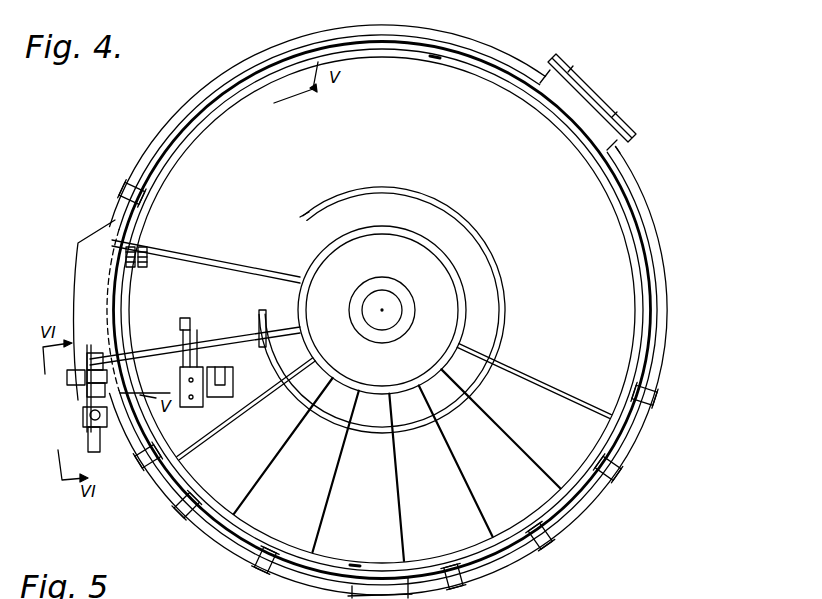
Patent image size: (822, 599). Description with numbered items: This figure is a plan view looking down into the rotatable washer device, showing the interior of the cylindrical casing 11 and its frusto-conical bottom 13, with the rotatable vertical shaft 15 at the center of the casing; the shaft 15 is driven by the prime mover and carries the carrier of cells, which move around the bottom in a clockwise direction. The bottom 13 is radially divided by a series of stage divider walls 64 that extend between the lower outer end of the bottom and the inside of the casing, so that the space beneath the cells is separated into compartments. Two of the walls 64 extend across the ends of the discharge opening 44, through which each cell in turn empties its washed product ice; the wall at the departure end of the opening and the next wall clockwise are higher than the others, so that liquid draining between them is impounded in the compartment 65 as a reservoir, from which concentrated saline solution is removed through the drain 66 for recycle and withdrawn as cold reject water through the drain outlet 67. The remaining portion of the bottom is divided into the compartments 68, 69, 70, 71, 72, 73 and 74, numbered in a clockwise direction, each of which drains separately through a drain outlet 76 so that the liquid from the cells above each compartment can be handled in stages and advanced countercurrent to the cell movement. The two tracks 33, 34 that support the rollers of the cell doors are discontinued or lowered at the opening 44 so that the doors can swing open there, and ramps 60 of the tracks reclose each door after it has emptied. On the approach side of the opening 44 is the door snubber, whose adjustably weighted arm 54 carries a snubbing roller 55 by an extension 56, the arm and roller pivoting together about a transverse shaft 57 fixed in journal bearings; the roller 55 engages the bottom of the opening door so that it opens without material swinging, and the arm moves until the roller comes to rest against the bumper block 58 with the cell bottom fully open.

The cylindrical casing 11 is at (588, 493).
The frusto-conical bottom 13 is at (611, 280).
The rotatable vertical shaft 15 is at (397, 297).
The track 33 is at (437, 55).
The track 34 is at (477, 233).
The discharge opening 44 is at (265, 312).
The adjustably weighted arm 54 is at (80, 407).
The snubbing roller 55 is at (185, 318).
The extension 56 is at (194, 342).
The transverse shaft 57 is at (75, 388).
The bumper block 58 is at (200, 408).
The ramp 60 is at (187, 150).
The stage divider wall 64 is at (253, 263).
The compartment 65 is at (428, 141).
The drain 66 is at (121, 187).
The drain outlet 67 is at (660, 400).
The compartment 68 is at (545, 419).
The compartment 69 is at (489, 453).
The compartment 70 is at (437, 475).
The compartment 71 is at (380, 487).
The compartment 72 is at (327, 459).
The compartment 73 is at (281, 441).
The compartment 74 is at (258, 384).
The drain outlet 76 is at (620, 480).